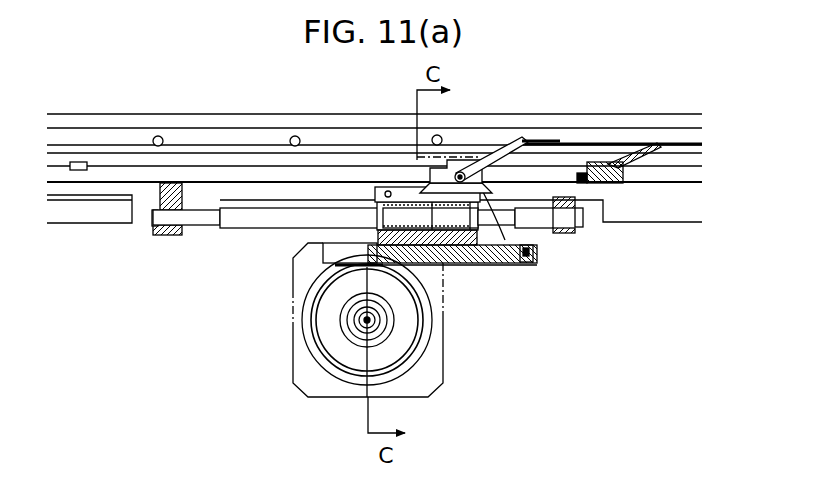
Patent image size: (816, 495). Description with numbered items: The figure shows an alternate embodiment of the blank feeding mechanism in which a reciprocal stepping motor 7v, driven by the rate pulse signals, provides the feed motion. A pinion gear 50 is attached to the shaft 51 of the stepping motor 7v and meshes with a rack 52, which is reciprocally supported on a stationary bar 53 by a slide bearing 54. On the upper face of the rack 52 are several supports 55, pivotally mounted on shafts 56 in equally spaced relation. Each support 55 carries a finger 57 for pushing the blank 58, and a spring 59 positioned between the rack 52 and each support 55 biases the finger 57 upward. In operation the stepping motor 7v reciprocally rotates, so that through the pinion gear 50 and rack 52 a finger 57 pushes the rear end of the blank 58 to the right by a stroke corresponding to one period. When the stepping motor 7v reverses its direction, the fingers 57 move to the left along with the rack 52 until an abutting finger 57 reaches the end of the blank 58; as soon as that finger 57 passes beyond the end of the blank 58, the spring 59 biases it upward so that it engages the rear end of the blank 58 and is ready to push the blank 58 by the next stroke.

The pinion gear 50 is at (345, 353).
The shaft 51 is at (353, 322).
The rack 52 is at (502, 268).
The stationary bar 53 is at (262, 220).
The slide bearing 54 is at (472, 265).
The support 55 is at (487, 187).
The shaft 56 is at (463, 172).
The finger 57 is at (497, 158).
The blank 58 is at (545, 140).
The spring 59 is at (515, 263).
The reciprocal stepping motor 7v is at (445, 357).